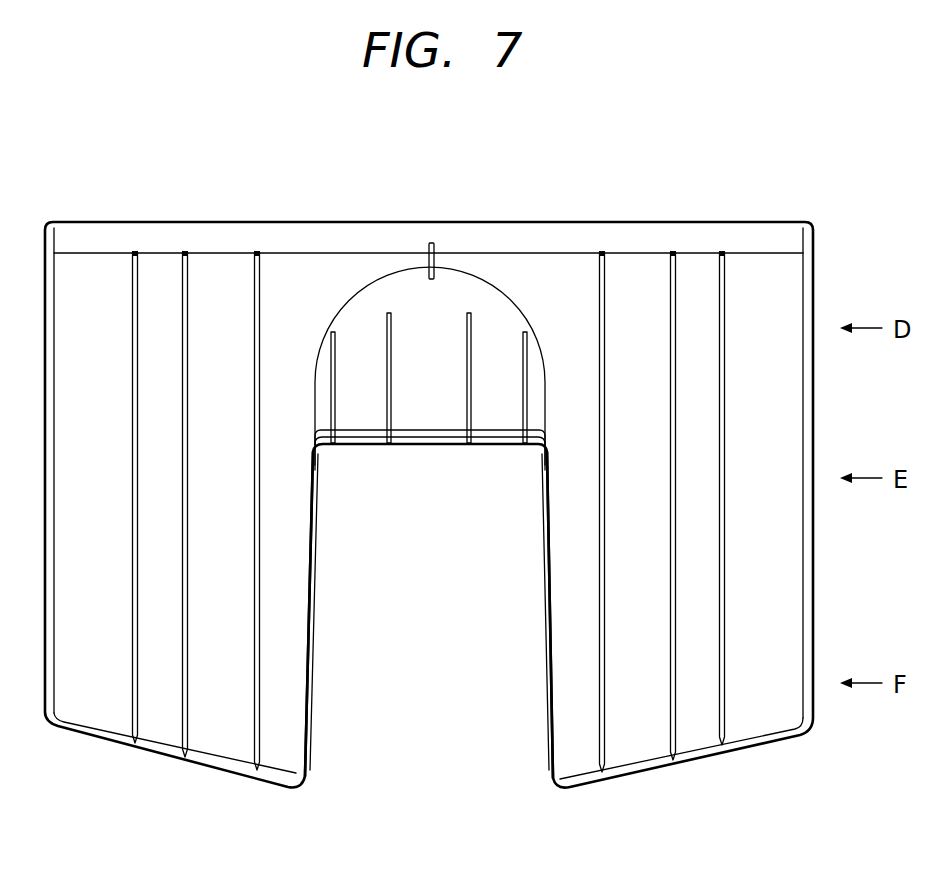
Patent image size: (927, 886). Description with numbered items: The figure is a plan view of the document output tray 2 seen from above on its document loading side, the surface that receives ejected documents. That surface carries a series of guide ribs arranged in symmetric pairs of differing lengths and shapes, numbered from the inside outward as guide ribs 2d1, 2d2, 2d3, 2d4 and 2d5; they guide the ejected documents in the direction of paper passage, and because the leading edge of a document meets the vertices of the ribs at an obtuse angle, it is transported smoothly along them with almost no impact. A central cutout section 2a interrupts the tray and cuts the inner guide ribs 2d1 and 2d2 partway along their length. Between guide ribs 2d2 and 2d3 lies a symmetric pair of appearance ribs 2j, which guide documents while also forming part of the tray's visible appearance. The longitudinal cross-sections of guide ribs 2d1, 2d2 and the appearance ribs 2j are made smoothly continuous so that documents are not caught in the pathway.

The document output tray 2 is at (758, 277).
The cutout section 2a is at (470, 754).
The guide rib 2d1 is at (467, 445).
The guide rib 2d2 is at (334, 445).
The guide rib 2d3 is at (260, 278).
The guide rib 2d4 is at (188, 278).
The guide rib 2d5 is at (140, 278).
The appearance rib 2j is at (313, 613).